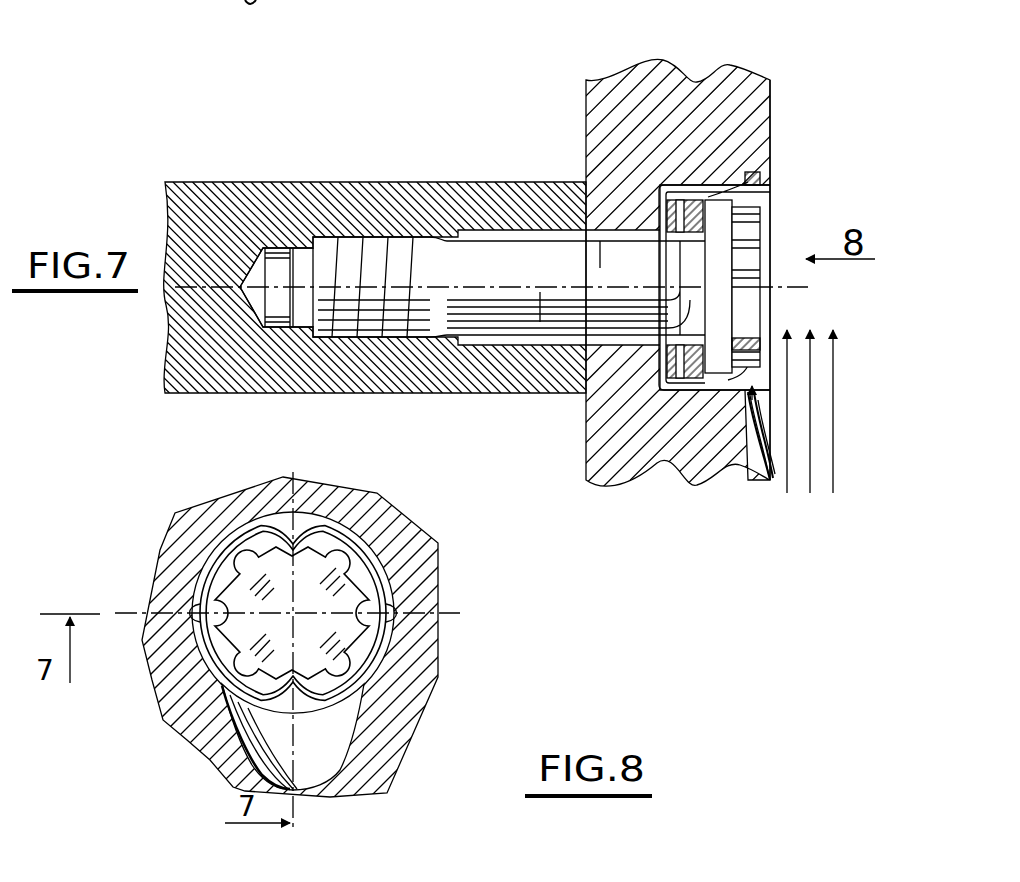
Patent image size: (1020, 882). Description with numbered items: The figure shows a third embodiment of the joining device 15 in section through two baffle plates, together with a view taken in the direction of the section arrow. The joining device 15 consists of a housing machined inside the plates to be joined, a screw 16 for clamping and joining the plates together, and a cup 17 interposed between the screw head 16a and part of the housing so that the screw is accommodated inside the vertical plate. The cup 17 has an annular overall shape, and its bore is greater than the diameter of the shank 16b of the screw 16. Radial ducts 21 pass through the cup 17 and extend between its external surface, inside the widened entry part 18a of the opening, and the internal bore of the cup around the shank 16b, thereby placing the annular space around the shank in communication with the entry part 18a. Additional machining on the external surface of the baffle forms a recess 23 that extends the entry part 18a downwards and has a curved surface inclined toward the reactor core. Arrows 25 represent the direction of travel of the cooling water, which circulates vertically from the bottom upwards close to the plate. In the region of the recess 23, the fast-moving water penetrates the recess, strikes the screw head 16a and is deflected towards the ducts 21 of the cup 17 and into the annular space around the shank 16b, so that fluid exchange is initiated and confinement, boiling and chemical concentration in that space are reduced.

In FIG. 7, the joining device 15 is at (792, 230).
In FIG. 7, the screw 16 is at (497, 233).
In FIG. 7, the screw head 16a is at (742, 232).
In FIG. 7, the shank 16b is at (540, 300).
In FIG. 7, the cup 17 is at (658, 198).
In FIG. 8, the entry part 18a is at (387, 543).
In FIG. 7, the radial ducts 21 is at (720, 197).
In FIG. 7, the recess 23 is at (770, 430).
In FIG. 8, the recess 23 is at (323, 745).
In FIG. 7, the arrows 25 is at (833, 405).